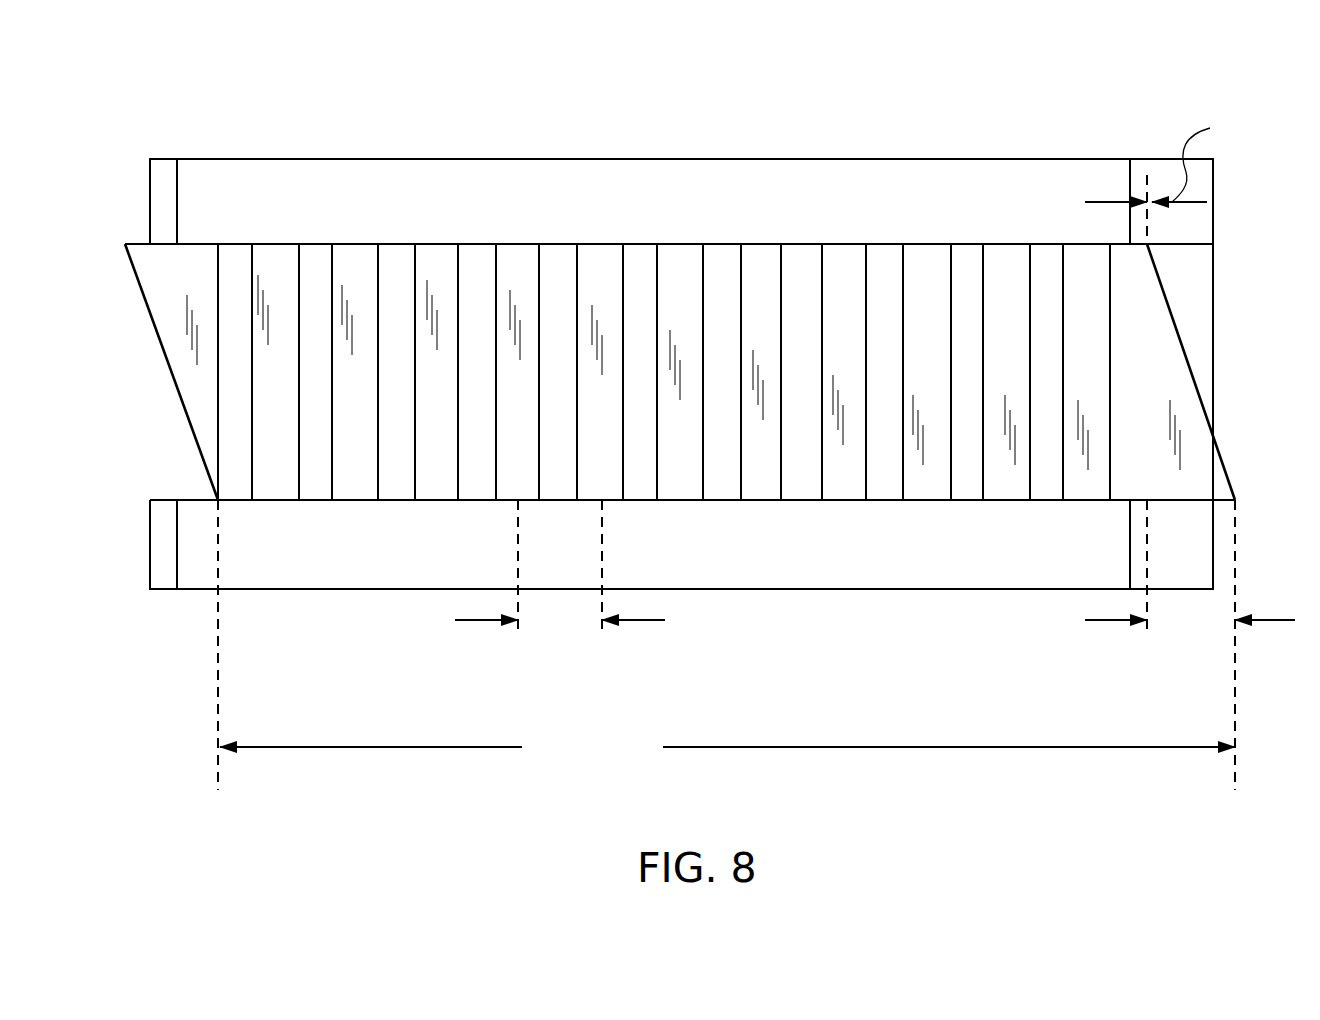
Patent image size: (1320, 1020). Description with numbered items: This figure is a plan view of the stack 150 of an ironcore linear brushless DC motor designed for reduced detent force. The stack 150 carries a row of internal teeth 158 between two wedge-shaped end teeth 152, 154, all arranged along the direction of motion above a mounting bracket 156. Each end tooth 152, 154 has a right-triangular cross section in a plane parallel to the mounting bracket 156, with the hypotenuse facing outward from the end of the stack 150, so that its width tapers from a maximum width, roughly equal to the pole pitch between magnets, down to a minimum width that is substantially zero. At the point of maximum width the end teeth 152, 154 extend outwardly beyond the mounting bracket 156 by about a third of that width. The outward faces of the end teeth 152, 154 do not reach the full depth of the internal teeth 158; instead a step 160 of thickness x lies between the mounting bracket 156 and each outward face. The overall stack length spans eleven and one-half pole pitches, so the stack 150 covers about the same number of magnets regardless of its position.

The stack 150 is at (710, 425).
The wedge-shaped end tooth 152 is at (188, 263).
The wedge-shaped end tooth 154 is at (1172, 358).
The mounting bracket 156 is at (350, 186).
The internal teeth 158 is at (435, 258).
The step 160 is at (1195, 268).